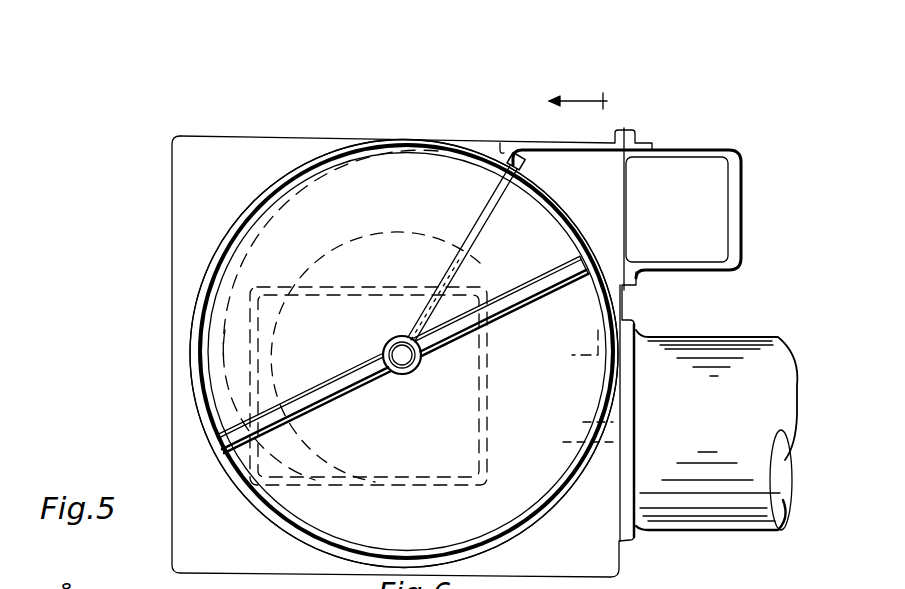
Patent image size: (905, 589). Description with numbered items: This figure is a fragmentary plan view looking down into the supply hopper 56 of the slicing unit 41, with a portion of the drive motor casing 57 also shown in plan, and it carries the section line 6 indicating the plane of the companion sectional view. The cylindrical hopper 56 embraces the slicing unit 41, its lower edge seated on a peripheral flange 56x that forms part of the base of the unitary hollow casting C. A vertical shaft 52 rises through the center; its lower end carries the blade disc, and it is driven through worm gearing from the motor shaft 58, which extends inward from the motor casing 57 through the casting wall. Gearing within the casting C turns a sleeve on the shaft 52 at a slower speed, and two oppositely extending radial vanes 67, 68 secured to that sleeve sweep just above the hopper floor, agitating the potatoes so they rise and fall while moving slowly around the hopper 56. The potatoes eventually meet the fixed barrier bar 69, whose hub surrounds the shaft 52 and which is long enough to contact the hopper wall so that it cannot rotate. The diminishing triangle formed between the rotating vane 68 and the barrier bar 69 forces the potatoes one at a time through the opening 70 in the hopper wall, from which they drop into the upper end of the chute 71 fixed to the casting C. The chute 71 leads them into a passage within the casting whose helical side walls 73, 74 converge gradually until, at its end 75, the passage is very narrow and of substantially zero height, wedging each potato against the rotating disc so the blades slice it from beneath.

The slicing unit 41 is at (478, 126).
The section line 6- 6 is at (585, 102).
The vertical shaft 52 is at (402, 353).
The hopper 56 is at (260, 513).
The peripheral flange 56x is at (190, 347).
The motor casing 57 is at (744, 506).
The motor shaft 58 is at (568, 422).
The vane 67 is at (533, 296).
The vane 68 is at (308, 393).
The fixed barrier bar 69 is at (480, 219).
The opening 70 is at (632, 588).
The chute 71 is at (700, 149).
The side wall of passage 73 is at (368, 371).
The side wall of passage 74 is at (271, 220).
The end of passage 75 is at (356, 466).
The hollow casting C is at (536, 146).